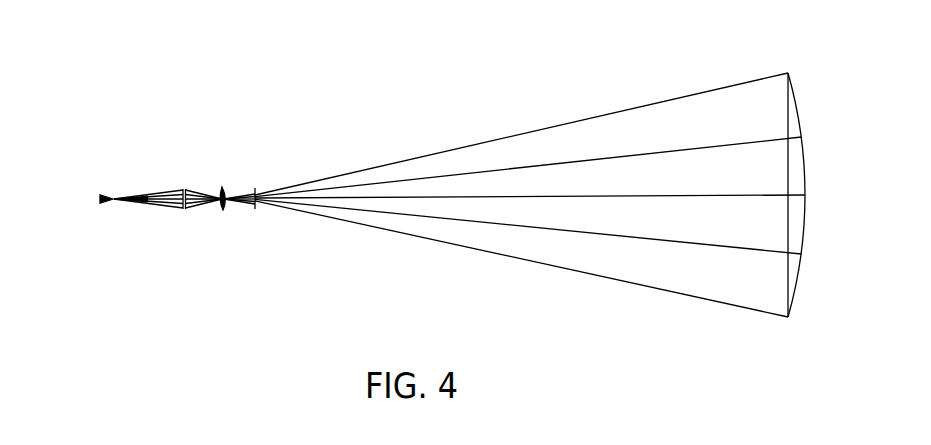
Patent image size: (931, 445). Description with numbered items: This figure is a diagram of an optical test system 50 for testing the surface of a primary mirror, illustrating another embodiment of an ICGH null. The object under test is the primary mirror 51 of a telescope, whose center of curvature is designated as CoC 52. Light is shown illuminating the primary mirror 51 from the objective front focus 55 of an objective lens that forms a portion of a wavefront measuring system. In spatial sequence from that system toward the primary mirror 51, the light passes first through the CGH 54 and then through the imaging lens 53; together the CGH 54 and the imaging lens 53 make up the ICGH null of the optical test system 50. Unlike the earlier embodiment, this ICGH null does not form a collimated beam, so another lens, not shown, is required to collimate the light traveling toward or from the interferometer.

The optical test system 50 is at (523, 69).
The primary mirror 51 is at (797, 172).
The center of curvature of the primary mirror 52 is at (257, 208).
The imaging lens 53 is at (223, 188).
The CGH 54 is at (188, 210).
The objective front focus 55 is at (100, 199).